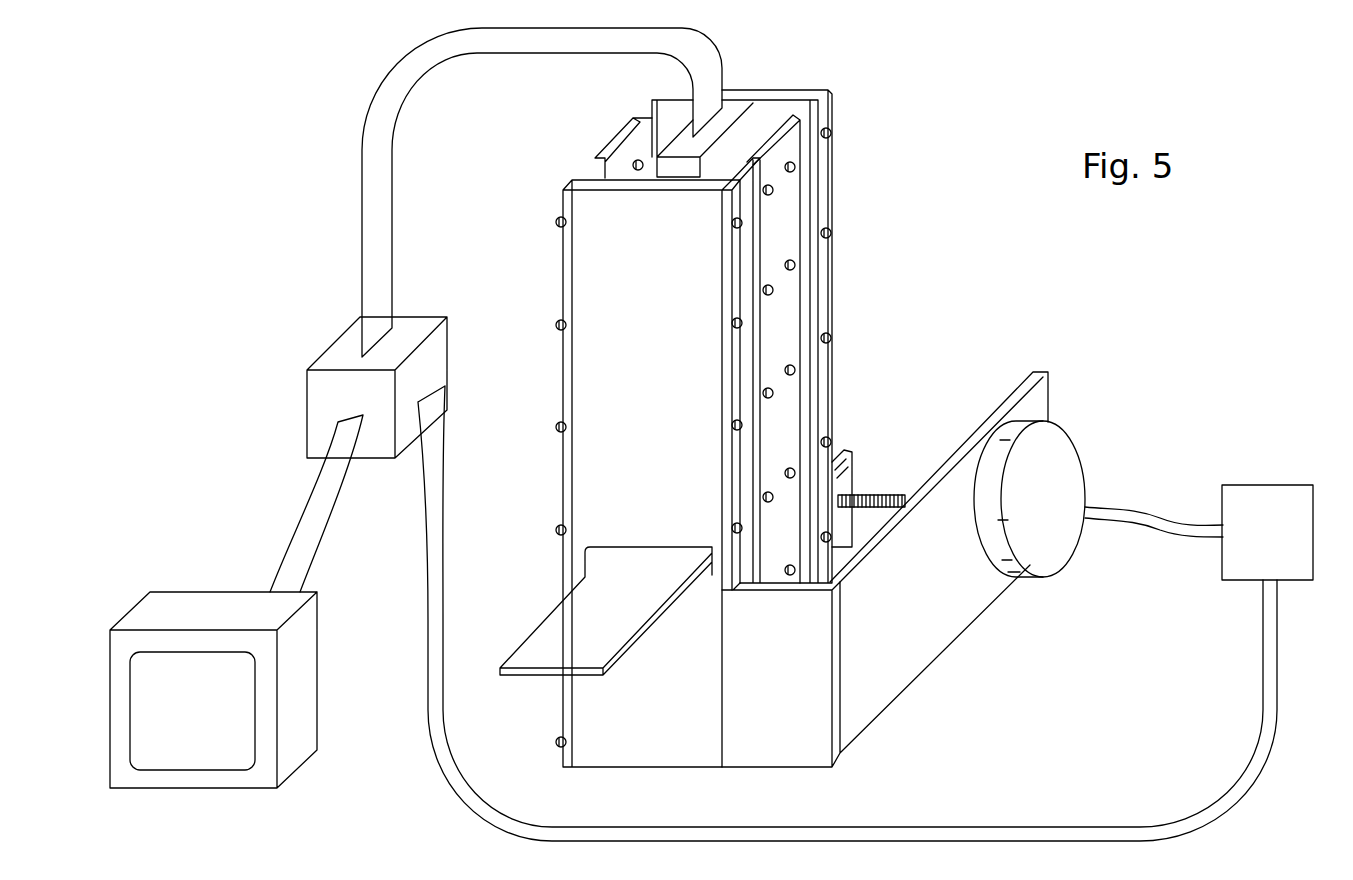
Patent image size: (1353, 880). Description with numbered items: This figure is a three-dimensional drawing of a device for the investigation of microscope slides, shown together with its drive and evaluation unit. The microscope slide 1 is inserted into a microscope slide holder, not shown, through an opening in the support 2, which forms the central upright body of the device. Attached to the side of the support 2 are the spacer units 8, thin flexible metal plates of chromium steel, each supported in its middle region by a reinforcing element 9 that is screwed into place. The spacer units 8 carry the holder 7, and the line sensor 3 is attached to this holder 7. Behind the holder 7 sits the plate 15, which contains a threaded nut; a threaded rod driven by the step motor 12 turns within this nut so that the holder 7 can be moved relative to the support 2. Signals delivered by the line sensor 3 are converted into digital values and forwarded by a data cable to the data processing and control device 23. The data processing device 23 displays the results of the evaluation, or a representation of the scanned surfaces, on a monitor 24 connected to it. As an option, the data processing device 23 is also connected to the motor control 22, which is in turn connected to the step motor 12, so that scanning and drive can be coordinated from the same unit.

The microscope slide 1 is at (553, 637).
The support 2 is at (653, 408).
The line sensor 3 is at (735, 108).
The holder 7 is at (803, 94).
The spacer units 8 is at (805, 202).
The reinforcing element 9 is at (780, 313).
The step motor 12 is at (1065, 450).
The plate 15 is at (847, 467).
The motor control 22 is at (1260, 503).
The data processing and control device 23 is at (325, 395).
The monitor 24 is at (293, 758).